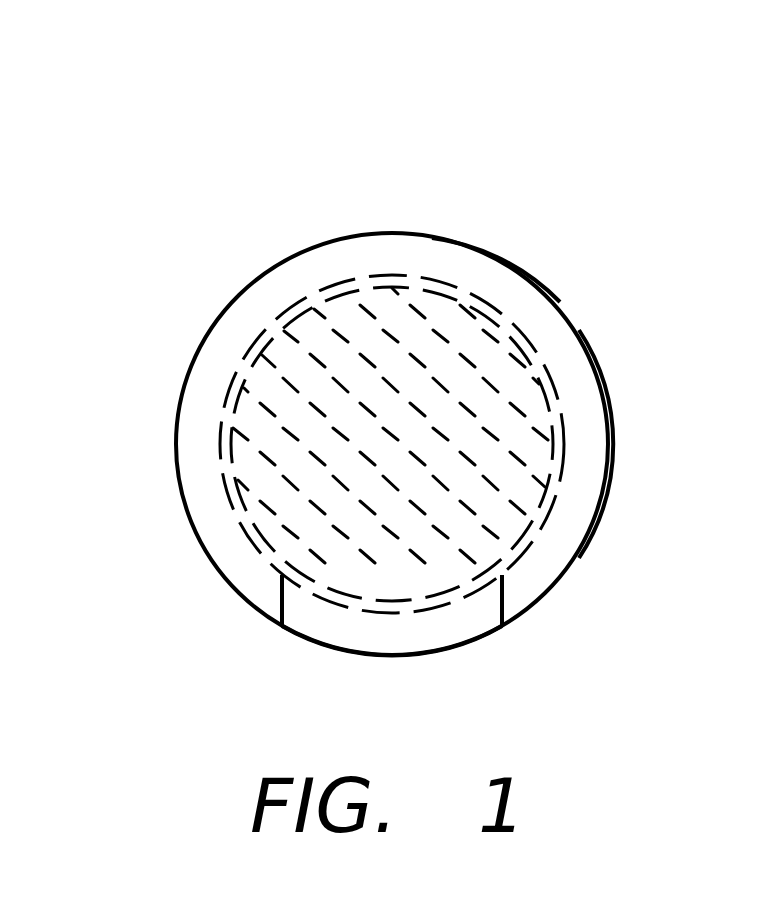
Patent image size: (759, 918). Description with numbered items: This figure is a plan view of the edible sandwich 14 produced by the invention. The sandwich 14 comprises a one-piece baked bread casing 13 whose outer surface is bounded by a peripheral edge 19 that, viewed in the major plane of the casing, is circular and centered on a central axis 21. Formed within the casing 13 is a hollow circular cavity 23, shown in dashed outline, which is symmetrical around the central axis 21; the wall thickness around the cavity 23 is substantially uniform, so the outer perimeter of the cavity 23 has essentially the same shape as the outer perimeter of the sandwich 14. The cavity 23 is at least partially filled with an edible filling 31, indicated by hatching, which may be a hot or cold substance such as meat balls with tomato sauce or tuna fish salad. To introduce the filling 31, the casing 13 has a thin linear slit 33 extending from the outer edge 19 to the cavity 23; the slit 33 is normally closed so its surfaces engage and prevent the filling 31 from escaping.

The baked bread casing 13 is at (470, 263).
The edible sandwich 14 is at (563, 313).
The peripheral edge 19 is at (607, 443).
The central axis 21 is at (353, 437).
The hollow circular cavity 23 is at (386, 278).
The edible filling 31 is at (313, 338).
The thin linear slit 33 is at (377, 640).